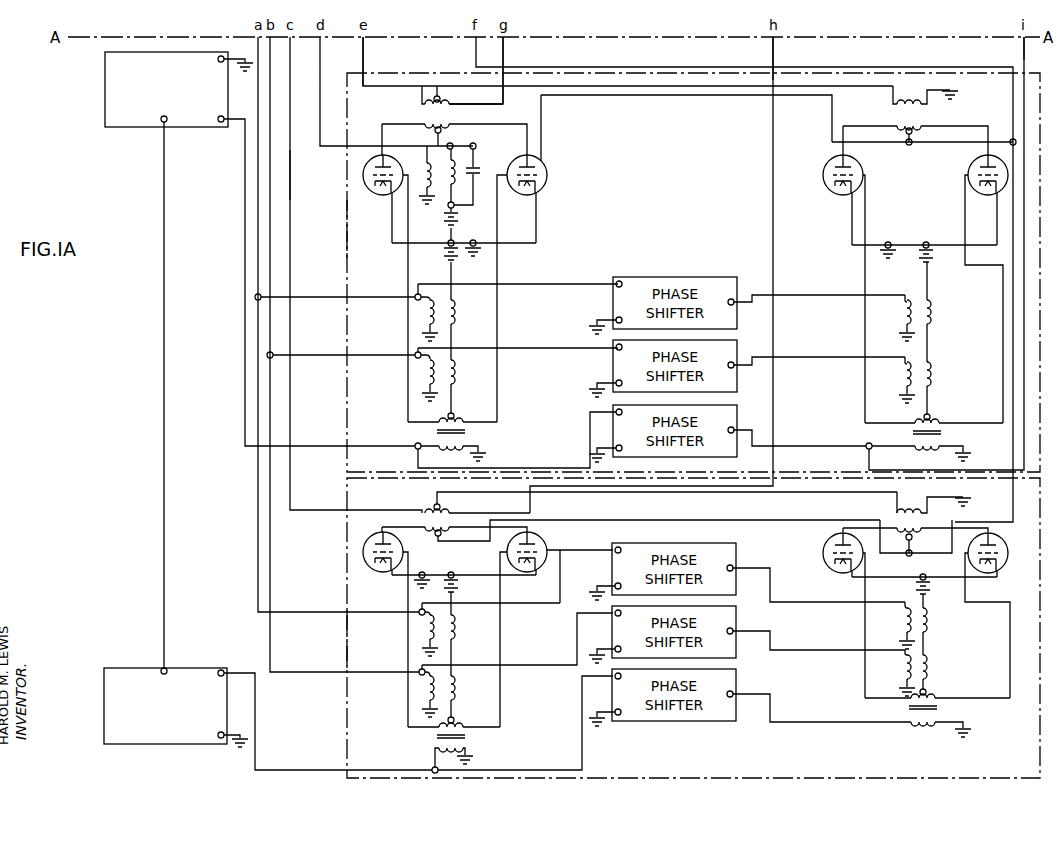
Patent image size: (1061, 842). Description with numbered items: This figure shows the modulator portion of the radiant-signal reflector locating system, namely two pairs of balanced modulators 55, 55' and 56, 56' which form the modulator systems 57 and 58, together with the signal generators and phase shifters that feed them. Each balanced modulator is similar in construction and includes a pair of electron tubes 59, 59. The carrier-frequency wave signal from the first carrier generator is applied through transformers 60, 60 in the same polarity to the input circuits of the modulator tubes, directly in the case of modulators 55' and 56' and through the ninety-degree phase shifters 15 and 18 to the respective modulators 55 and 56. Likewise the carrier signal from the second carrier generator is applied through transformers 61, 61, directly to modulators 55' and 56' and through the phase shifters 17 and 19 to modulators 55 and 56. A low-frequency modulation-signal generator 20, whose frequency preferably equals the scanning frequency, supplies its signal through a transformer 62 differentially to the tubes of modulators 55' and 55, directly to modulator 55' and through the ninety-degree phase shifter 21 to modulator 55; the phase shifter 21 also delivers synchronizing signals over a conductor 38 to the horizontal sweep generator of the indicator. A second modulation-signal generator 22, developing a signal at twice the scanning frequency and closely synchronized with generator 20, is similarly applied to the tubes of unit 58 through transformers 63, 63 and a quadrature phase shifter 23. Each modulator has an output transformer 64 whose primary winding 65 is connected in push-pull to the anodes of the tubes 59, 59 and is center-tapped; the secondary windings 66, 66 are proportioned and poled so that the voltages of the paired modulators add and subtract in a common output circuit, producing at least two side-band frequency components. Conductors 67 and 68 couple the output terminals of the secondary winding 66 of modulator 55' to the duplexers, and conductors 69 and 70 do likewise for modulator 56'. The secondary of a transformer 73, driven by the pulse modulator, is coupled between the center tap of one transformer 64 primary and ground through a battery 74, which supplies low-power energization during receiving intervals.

The 90-degree phase shifter 15 is at (611, 306).
The 90-degree phase shifter 17 is at (610, 369).
The 90-degree phase shifter 18 is at (736, 556).
The 90-degree phase shifter 19 is at (736, 620).
The low-frequency modulation-signal generator 20 is at (105, 92).
The 90-degree phase shifter 21 is at (740, 416).
The modulation-signal generator 22 is at (133, 666).
The quadrature phase shifter 23 is at (736, 684).
The conductor 38 is at (1021, 53).
The balanced modulator 55 is at (912, 184).
The balanced modulator 55' is at (564, 156).
The balanced modulator 56 is at (898, 566).
The balanced modulator 56' is at (443, 554).
The modulator system 57 is at (346, 240).
The modulator system 58 is at (348, 648).
The electron tube 59 is at (374, 202).
The transformer 60 is at (439, 292).
The transformer 61 is at (440, 372).
The transformer 62 is at (436, 437).
The transformer 63 is at (432, 739).
The output transformer 64 is at (402, 113).
The primary winding 65 is at (450, 126).
The secondary winding 66 is at (455, 101).
The conductor 67 is at (363, 64).
The conductor 68 is at (503, 64).
The conductor 69 is at (290, 186).
The conductor 70 is at (773, 60).
The transformer 73 is at (438, 206).
The battery 74 is at (462, 229).